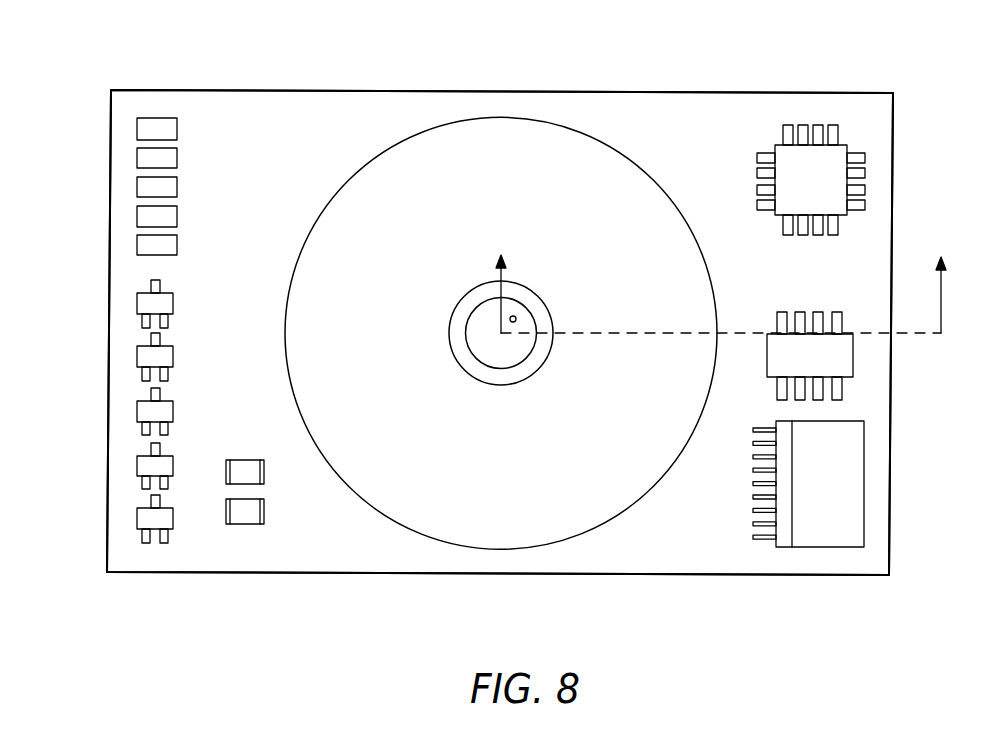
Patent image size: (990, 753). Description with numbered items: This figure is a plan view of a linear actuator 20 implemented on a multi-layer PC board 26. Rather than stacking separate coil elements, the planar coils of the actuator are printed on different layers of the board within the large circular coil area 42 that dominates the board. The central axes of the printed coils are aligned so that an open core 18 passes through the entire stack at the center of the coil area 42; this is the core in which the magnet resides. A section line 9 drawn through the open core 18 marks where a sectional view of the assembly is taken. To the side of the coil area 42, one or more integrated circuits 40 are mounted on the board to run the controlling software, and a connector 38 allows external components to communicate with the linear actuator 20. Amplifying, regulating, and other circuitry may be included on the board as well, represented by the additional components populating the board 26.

The linear actuator 20 is at (186, 45).
The multi-layer PC board 26 is at (698, 557).
The coil area 42 is at (400, 490).
The open core 18 is at (515, 316).
The section line 9- 9 is at (723, 280).
The integrated circuits 40 is at (832, 173).
The connector 38 is at (853, 482).